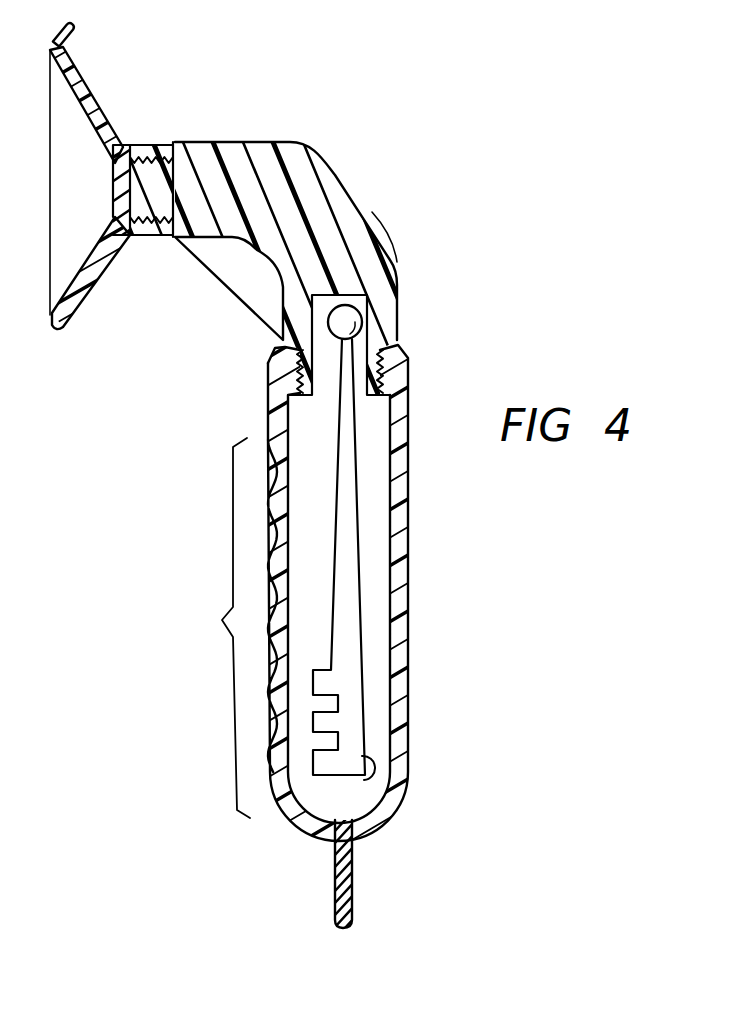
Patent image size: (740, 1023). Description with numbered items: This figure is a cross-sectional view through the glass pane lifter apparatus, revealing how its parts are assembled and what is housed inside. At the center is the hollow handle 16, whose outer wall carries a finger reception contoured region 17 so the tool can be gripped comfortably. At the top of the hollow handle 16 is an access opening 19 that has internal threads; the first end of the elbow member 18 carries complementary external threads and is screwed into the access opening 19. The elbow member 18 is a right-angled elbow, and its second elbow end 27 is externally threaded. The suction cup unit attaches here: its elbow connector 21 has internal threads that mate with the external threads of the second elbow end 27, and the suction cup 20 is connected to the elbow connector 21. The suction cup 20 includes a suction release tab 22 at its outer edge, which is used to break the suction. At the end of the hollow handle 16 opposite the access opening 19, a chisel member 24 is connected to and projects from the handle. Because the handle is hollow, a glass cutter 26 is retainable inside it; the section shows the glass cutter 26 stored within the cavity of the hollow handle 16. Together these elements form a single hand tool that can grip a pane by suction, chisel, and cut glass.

The hollow handle 16 is at (407, 518).
The finger reception contoured region 17 is at (222, 620).
The elbow member 18 is at (337, 222).
The access opening 19 is at (395, 337).
The suction cup 20 is at (90, 110).
The elbow connector 21 is at (145, 150).
The suction release tab 22 is at (70, 40).
The chisel member 24 is at (353, 887).
The glass cutter 26 is at (353, 648).
The second elbow end 27 is at (148, 197).